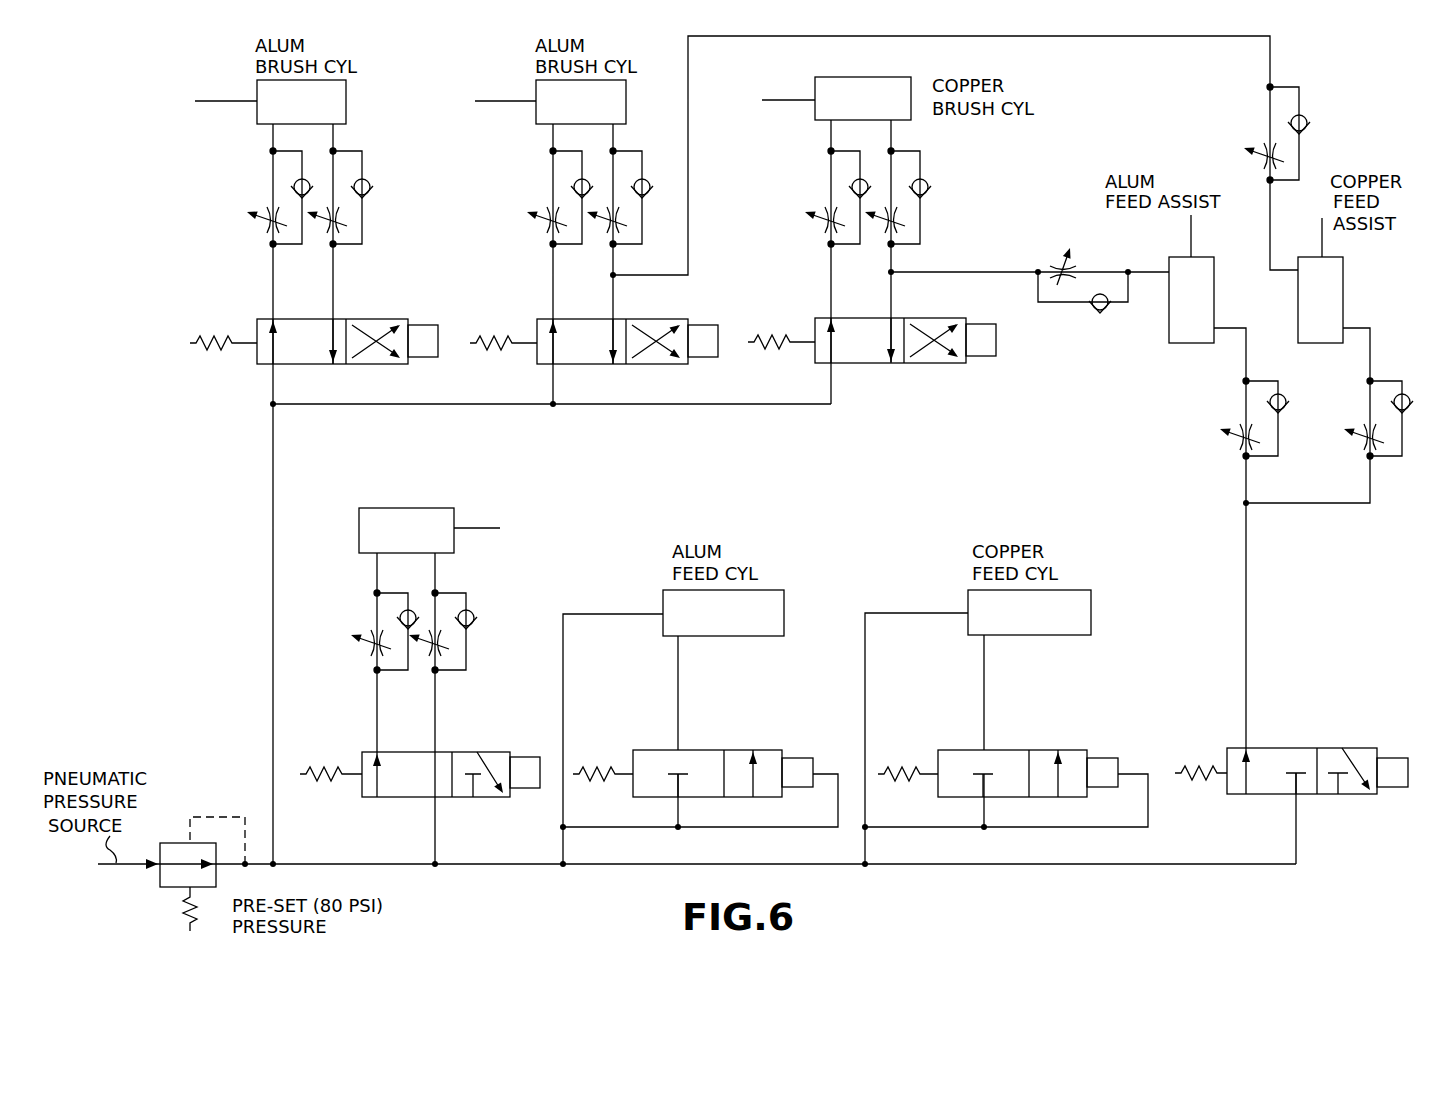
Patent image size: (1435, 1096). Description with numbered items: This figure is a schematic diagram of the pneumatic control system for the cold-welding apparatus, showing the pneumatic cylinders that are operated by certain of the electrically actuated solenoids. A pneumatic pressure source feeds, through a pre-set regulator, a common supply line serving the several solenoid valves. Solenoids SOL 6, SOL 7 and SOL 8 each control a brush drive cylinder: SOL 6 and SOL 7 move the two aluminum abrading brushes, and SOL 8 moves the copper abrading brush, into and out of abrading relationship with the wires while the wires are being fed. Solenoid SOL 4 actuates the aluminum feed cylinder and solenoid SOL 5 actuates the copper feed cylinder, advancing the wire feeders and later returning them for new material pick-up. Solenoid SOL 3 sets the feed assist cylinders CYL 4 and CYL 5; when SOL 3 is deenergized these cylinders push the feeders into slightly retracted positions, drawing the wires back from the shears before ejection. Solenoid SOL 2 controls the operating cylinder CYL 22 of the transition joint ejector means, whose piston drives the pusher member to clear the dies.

The solenoid SOL 2 is at (420, 757).
The solenoid SOL 3 is at (1291, 754).
The solenoid SOL 4 / feed assist cylinder CYL 4 is at (893, 527).
The solenoid SOL 5 / feed assist cylinder CYL 5 is at (1110, 527).
The solenoid SOL 6 is at (317, 358).
The solenoid SOL 7 is at (597, 358).
The solenoid SOL 8 is at (876, 358).
The operating cylinder CYL 22 is at (406, 530).